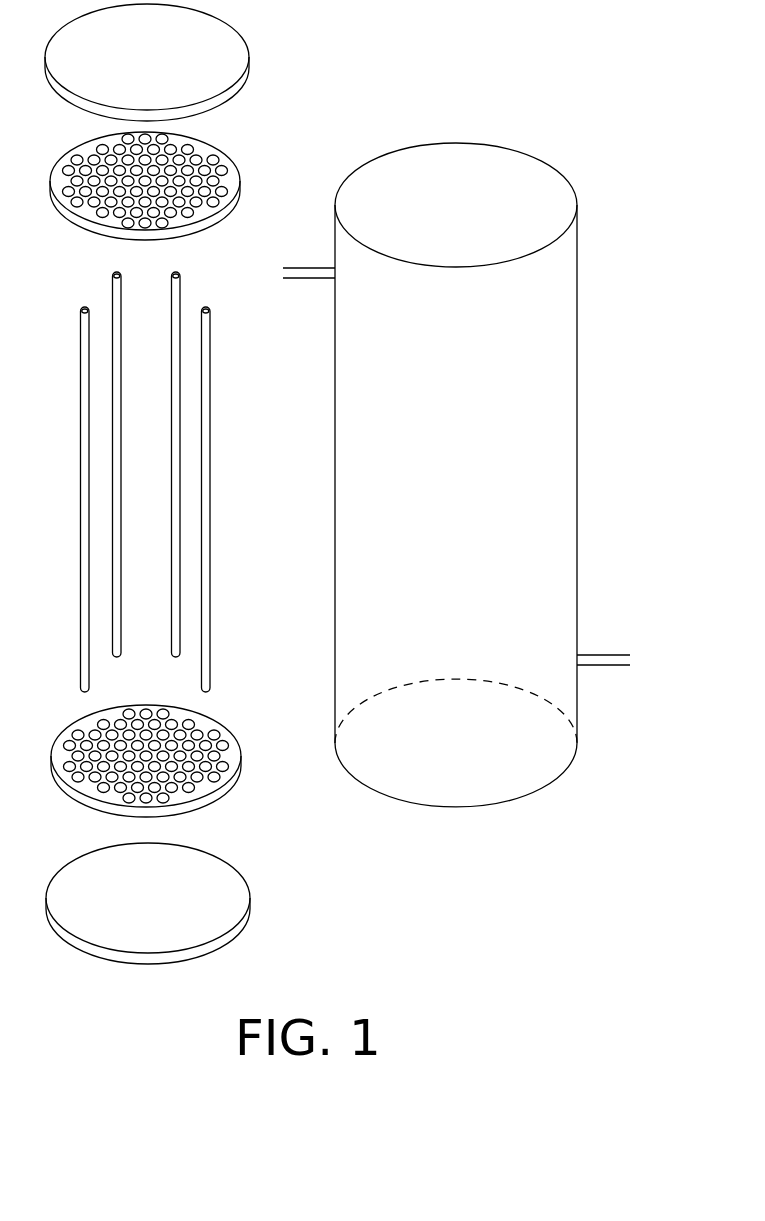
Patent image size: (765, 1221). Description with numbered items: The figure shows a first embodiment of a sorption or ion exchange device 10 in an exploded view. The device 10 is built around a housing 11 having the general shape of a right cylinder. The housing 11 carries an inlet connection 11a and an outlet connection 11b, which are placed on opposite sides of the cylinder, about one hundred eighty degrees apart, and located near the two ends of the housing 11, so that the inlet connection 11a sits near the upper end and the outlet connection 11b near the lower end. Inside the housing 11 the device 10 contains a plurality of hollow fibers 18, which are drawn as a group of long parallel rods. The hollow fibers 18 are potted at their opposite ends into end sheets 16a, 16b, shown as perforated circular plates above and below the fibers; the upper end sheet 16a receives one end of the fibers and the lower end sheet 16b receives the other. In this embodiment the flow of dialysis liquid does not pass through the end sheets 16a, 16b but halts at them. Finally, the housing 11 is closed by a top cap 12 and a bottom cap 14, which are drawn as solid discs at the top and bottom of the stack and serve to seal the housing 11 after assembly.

The device 10 is at (463, 907).
The housing 11 is at (562, 773).
The inlet connection 11a is at (310, 279).
The outlet connection 11b is at (622, 667).
The top cap 12 is at (249, 42).
The bottom cap 14 is at (249, 890).
The end sheet 16a is at (241, 172).
The end sheet 16b is at (243, 770).
The hollow fibers 18 is at (237, 555).